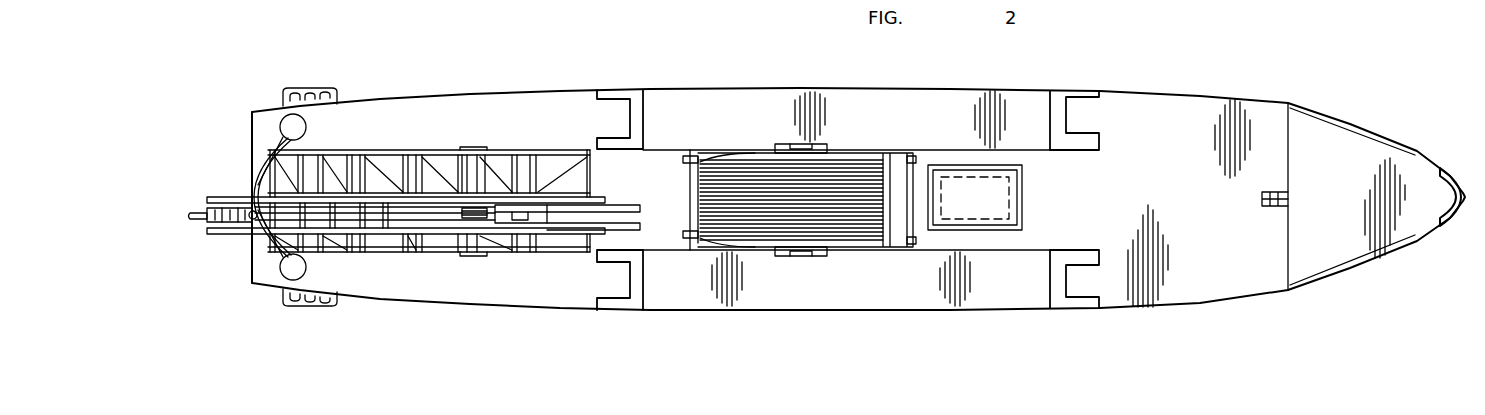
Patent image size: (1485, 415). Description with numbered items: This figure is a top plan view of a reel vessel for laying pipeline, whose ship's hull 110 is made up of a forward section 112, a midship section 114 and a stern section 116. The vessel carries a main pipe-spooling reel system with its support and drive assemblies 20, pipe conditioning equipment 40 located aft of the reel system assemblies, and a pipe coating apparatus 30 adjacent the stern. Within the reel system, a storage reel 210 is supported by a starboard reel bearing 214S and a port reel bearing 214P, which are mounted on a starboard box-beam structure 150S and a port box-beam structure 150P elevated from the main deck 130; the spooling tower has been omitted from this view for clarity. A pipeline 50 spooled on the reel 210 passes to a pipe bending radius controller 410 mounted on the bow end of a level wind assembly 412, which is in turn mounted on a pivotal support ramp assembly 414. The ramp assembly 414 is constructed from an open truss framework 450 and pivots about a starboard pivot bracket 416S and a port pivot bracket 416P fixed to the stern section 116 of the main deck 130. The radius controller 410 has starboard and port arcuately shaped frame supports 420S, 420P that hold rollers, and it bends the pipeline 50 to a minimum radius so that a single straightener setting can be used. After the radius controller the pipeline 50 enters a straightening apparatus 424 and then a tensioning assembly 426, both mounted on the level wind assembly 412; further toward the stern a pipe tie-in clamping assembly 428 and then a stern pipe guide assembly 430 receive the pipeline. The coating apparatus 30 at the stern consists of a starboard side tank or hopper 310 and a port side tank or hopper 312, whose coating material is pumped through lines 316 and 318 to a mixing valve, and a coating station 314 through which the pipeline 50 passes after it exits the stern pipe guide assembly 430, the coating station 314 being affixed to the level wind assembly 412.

The main pipe-spooling reel system and associated support and drive assemblies 20 is at (948, 100).
The pipe coating apparatus 30 is at (237, 183).
The pipe conditioning equipment 40 is at (525, 108).
The pipeline 50 is at (664, 212).
The ship's hull 110 is at (1264, 100).
The forward section 112 is at (1172, 108).
The midship section 114 is at (774, 93).
The stern section 116 is at (380, 100).
The main deck 130 is at (1004, 197).
The port box-beam structure 150P is at (1035, 100).
The starboard box-beam structure 150S is at (1023, 288).
The storage reel 210 is at (705, 183).
The port reel bearing 214P is at (800, 144).
The starboard reel bearing 214S is at (803, 254).
The starboard side tank or hopper 310 is at (307, 267).
The port side tank or hopper 312 is at (288, 116).
The coating station 314 is at (231, 219).
The line 316 is at (258, 265).
The line 318 is at (263, 168).
The pipe bending radius controller 410 is at (624, 240).
The level wind assembly 412 is at (443, 237).
The pivotal support ramp assembly 414 is at (403, 150).
The port pivot bracket 416P is at (263, 150).
The starboard pivot bracket 416S is at (277, 263).
The port arcuately shaped frame support 420P is at (623, 206).
The starboard arcuately shaped frame support 420S is at (608, 255).
The straightening apparatus 424 is at (523, 220).
The tensioning assembly 426 is at (480, 212).
The pipe tie-in clamping assembly 428 is at (332, 207).
The stern pipe guide assembly 430 is at (263, 262).
The open truss framework 450 is at (375, 172).